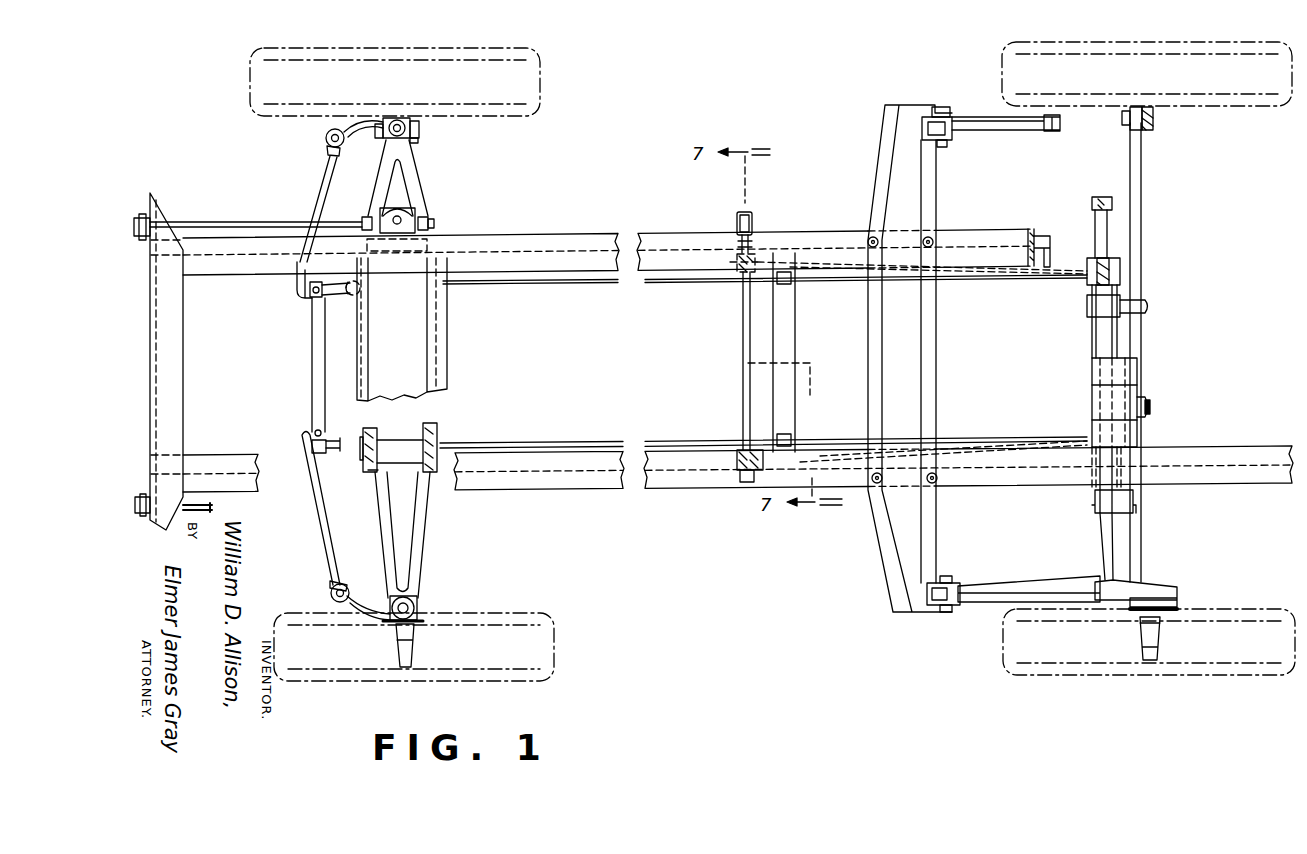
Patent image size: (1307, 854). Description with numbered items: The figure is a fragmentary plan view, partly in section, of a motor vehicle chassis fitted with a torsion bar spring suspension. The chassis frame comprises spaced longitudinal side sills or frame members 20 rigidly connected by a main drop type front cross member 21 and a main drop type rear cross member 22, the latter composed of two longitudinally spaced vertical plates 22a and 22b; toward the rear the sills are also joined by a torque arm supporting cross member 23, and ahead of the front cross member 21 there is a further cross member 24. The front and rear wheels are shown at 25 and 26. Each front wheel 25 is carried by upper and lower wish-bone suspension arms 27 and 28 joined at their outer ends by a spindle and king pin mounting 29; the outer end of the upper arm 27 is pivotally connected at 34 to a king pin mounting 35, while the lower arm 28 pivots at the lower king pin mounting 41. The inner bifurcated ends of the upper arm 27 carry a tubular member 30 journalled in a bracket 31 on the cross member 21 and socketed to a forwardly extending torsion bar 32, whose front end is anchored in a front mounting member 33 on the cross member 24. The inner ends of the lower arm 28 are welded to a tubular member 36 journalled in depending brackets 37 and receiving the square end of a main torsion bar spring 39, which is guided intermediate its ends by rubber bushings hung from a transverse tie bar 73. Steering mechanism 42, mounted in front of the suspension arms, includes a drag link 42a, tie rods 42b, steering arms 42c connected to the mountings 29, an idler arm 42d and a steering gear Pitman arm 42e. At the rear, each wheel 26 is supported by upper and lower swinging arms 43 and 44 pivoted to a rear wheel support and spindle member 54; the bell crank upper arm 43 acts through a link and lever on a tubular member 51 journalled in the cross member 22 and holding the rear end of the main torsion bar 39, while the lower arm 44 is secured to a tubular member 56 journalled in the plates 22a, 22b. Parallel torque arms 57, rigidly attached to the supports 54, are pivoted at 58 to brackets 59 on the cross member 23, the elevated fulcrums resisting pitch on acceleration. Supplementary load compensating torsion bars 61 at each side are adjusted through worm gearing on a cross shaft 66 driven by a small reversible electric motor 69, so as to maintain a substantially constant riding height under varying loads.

The longitudinal side sills or frame members 20 is at (545, 240).
The main drop type front cross member 21 is at (438, 352).
The main drop type rear cross member 22 is at (1086, 395).
The vertical plate 22a is at (1092, 340).
The vertical plate 22b is at (1121, 340).
The torque arm supporting cross member 23 is at (935, 374).
The cross member 24 is at (175, 370).
The front wheel 25 is at (540, 78).
The rear wheel 26 is at (1247, 108).
The upper suspension arm 27 is at (415, 156).
The lower suspension arm 28 is at (420, 528).
The spindle and king pin mounting 29 is at (405, 124).
The tubular member 30 is at (430, 222).
The bracket 31 is at (400, 238).
The torsion bar 32 is at (232, 223).
The front mounting member 33 is at (158, 210).
The pivotal connection 34 is at (419, 129).
The king pin mounting 35 is at (418, 141).
The tubular member 36 is at (392, 440).
The depending bracket 37 is at (376, 472).
The main torsion bar spring 39 is at (556, 284).
The lower king pin mounting 41 is at (416, 600).
The steering mechanism 42 is at (324, 365).
The drag link 42a is at (315, 346).
The tie rod 42b is at (298, 286).
The steering arm 42c is at (372, 120).
The idler arm 42d is at (356, 298).
The steering gear Pitman arm 42e is at (332, 456).
The upper suspension arm 43 is at (1103, 232).
The lower suspension arm 44 is at (1140, 185).
The tubular member 51 is at (1120, 272).
The rear wheel support and spindle member 54 is at (1148, 128).
The tubular member 56 is at (1148, 304).
The torque arm 57 is at (1028, 128).
The pivotal connection 58 is at (945, 140).
The bracket 59 is at (938, 110).
The torsion bar 61 is at (1010, 272).
The cross shaft 66 is at (744, 300).
The reversible electric motor 69 is at (755, 222).
The tie bar 73 is at (796, 315).